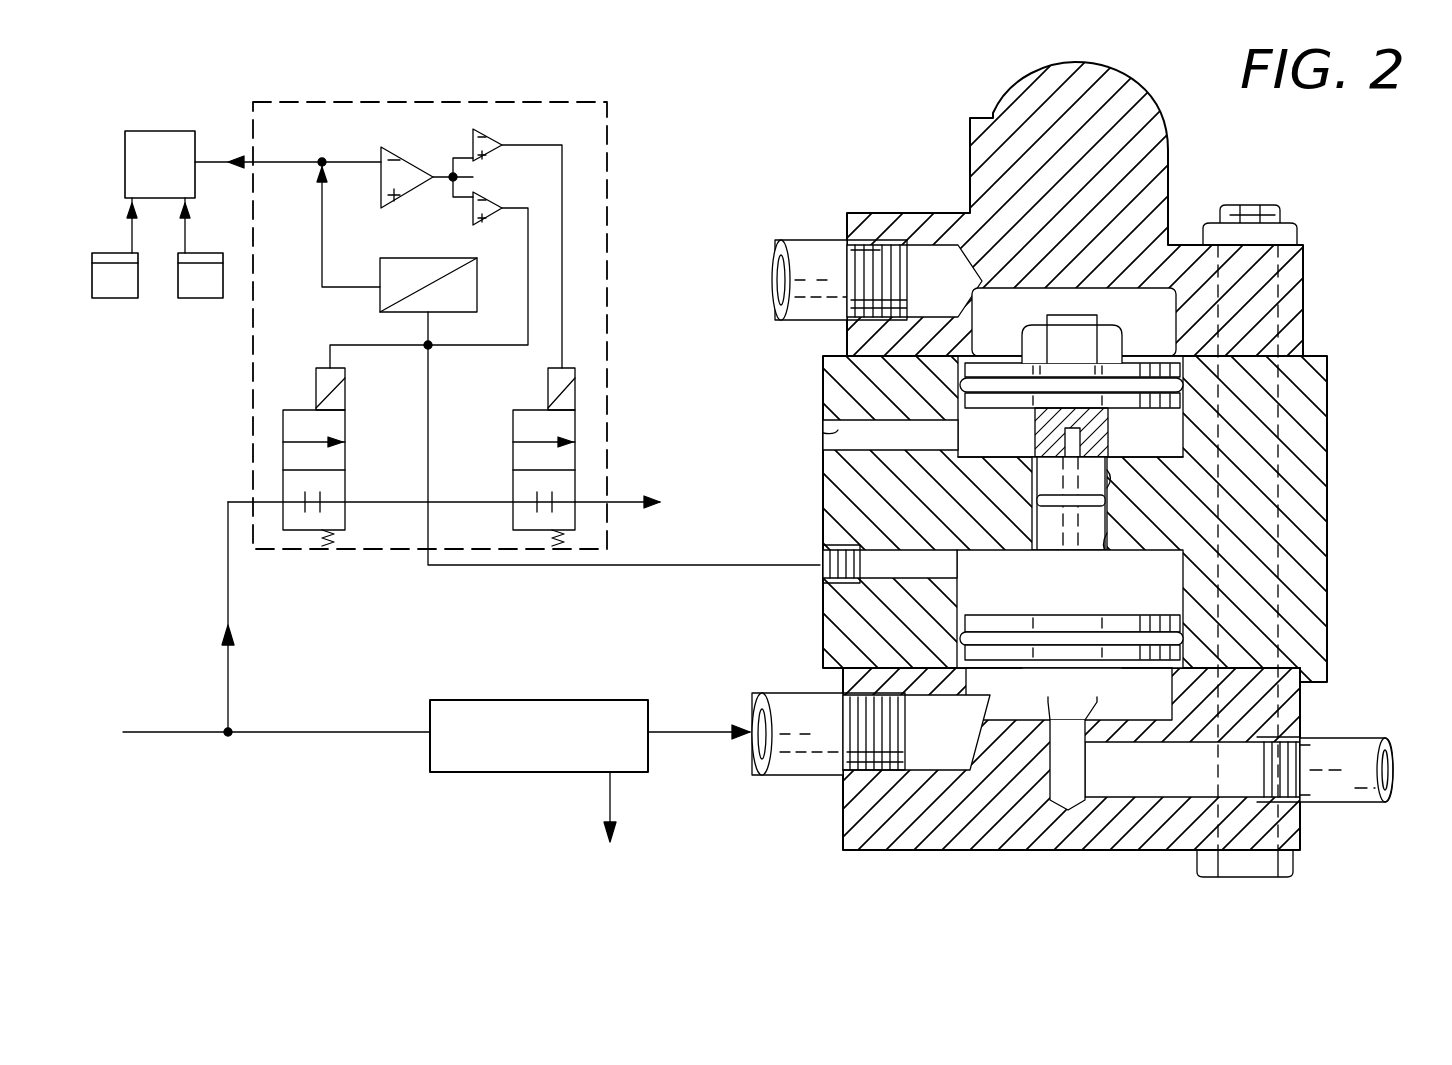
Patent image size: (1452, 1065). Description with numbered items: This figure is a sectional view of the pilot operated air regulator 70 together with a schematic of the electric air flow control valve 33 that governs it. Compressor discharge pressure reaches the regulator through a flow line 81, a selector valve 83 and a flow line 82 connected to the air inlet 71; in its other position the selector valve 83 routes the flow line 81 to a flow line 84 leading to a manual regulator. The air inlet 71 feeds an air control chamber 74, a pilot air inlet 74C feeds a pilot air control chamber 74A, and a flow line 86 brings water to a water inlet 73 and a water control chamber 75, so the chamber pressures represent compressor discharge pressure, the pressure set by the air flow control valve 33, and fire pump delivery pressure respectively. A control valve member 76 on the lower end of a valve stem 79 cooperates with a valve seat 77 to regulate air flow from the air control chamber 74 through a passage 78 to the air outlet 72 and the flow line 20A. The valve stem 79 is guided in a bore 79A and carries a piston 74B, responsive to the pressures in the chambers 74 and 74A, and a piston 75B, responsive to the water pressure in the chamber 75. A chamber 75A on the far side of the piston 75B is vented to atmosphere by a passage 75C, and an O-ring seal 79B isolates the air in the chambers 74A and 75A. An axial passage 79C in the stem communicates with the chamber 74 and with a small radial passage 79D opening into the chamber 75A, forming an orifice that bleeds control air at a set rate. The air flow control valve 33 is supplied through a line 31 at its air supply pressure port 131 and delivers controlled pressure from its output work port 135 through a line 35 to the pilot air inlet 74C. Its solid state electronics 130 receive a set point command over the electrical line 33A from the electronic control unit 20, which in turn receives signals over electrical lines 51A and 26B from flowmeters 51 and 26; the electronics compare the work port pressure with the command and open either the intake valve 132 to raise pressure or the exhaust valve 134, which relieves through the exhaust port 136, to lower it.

The electronic control unit 20 is at (160, 131).
The flow line 20A is at (1350, 738).
The flowmeter 26 is at (207, 300).
The electrical line 26B is at (188, 223).
The line 31 is at (228, 598).
The air flow control valve 33 is at (420, 102).
The electrical line 33A is at (212, 160).
The line 35 is at (608, 566).
The flowmeter 51 is at (115, 300).
The electrical line 51A is at (128, 215).
The pilot operated air regulator 70 is at (1168, 170).
The air inlet 71 is at (893, 745).
The air outlet 72 is at (1278, 765).
The water inlet 73 is at (896, 255).
The air control chamber 74 is at (1070, 635).
The pilot air control chamber 74A is at (1071, 589).
The piston 74B is at (1025, 598).
The pilot air inlet 74C is at (823, 582).
The water control chamber 75 is at (1070, 371).
The chamber 75A is at (1070, 434).
The piston 75B is at (1148, 363).
The passage 75C is at (823, 437).
The control valve member 76 is at (1095, 698).
The valve seat 77 is at (1092, 745).
The passage 78 is at (1070, 810).
The valve stem 79 is at (1095, 598).
The bore 79A is at (1108, 540).
The O-ring seal 79B is at (1037, 502).
The passage 79C is at (1112, 452).
The passage 79D is at (1040, 440).
The flow line 81 is at (132, 735).
The flow line 82 is at (795, 778).
The selector valve 83 is at (515, 700).
The flow line 84 is at (610, 793).
The flow line 86 is at (795, 242).
The solid state electronics 130 is at (430, 150).
The air supply pressure port 131 is at (228, 500).
The intake valve 132 is at (345, 440).
The exhaust valve 134 is at (513, 440).
The controlled pressure output work port 135 is at (426, 558).
The relieving pressure exhaust port 136 is at (610, 500).